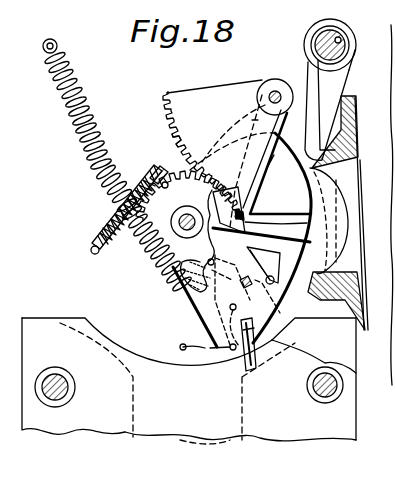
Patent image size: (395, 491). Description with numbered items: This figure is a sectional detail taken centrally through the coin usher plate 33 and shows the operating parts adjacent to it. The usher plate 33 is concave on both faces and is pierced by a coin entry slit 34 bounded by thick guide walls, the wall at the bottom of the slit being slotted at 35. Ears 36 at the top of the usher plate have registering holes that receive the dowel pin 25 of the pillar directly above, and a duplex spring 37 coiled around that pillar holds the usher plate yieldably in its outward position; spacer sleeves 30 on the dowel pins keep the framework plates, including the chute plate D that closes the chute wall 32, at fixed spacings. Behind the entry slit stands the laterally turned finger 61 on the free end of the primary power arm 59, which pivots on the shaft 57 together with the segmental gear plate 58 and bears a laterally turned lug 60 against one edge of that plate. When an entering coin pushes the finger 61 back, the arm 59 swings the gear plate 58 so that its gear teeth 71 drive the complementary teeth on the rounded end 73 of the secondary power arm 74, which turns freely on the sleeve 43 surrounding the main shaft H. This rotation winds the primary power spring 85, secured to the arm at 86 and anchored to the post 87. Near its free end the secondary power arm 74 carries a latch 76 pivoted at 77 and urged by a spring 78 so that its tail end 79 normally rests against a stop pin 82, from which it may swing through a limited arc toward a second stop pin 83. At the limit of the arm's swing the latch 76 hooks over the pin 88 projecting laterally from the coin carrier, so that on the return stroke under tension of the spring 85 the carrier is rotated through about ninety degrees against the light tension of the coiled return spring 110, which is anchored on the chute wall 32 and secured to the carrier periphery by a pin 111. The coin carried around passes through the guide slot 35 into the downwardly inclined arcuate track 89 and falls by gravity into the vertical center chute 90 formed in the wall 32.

The chute plate D is at (50, 326).
The main shaft H is at (172, 221).
The dowel pin 25 is at (348, 28).
The spacer sleeves 30 is at (307, 30).
The chute wall 32 is at (357, 372).
The usher plate 33 is at (357, 137).
The coin entry slit 34 is at (356, 241).
The guide slot 35 is at (306, 295).
The ears 36 is at (305, 75).
The duplex spring 37 is at (353, 65).
The sleeve 43 is at (200, 212).
The shaft 57 is at (272, 90).
The segmental gear plate 58 is at (208, 92).
The primary power arm 59 is at (245, 120).
The laterally turned lug 60 is at (278, 228).
The laterally turned finger 61 is at (245, 229).
The gear teeth 71 is at (168, 130).
The rounded end 73 is at (152, 176).
The secondary power arm 74 is at (195, 345).
The latch 76 is at (272, 262).
The latch pivot 77 is at (236, 309).
The spring 78 is at (192, 306).
The tail end 79 is at (246, 372).
The stop pin 82 is at (252, 350).
The second stop pin 83 is at (210, 350).
The primary power spring 85 is at (133, 261).
The spring attachment point 86 is at (205, 262).
The post 87 is at (58, 47).
The pin 88 is at (252, 284).
The arcuate track 89 is at (300, 352).
The vertical center chute 90 is at (195, 447).
The coiled return spring 110 is at (100, 232).
The pin 111 is at (176, 142).